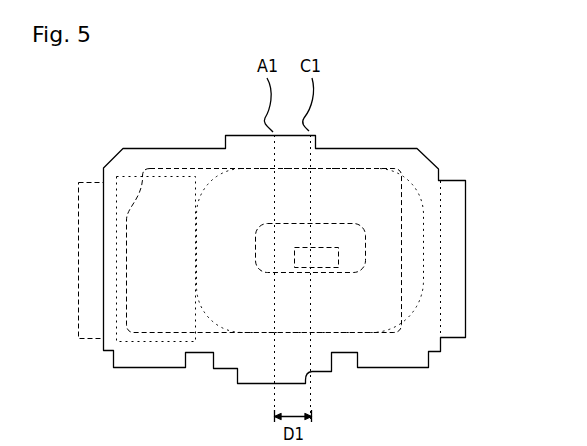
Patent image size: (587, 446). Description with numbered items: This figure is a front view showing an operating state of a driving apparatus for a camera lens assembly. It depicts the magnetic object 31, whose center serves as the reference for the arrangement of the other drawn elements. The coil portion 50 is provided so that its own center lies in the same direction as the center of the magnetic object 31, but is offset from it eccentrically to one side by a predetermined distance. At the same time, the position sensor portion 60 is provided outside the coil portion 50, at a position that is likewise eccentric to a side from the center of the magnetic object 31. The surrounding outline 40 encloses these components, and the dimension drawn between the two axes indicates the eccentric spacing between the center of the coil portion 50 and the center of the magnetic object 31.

The housing 40 is at (430, 160).
The coil portion 50 is at (423, 245).
The magnetic object 31 is at (401, 280).
The position sensor portion 60 is at (116, 206).